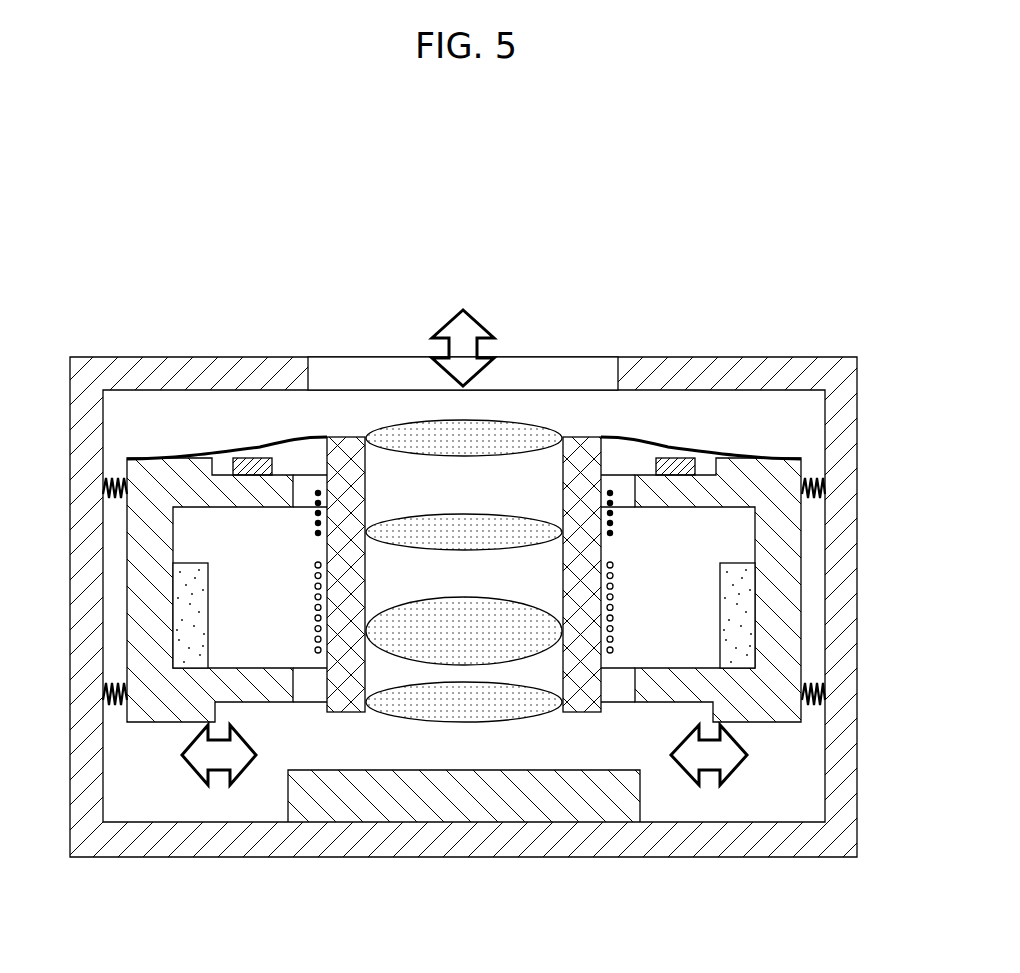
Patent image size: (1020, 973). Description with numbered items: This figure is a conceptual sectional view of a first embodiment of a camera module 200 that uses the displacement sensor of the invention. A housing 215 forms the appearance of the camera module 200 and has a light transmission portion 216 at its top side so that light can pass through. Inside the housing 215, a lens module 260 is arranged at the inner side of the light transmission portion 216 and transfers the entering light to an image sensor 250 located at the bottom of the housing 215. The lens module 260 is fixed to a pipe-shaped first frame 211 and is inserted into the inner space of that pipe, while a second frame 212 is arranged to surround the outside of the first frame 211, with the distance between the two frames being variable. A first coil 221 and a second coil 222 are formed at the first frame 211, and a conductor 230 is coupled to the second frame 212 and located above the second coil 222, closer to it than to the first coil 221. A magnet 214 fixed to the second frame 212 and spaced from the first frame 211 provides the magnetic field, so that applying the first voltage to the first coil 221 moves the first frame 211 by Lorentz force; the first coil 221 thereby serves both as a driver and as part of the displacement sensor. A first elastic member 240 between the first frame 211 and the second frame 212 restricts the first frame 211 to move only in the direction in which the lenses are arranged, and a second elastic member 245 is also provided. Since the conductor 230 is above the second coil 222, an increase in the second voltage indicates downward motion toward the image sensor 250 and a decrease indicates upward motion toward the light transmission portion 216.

The camera module 200 is at (106, 270).
The first frame 211 is at (795, 658).
The second frame 212 is at (582, 703).
The magnet 214 is at (177, 628).
The housing 215 is at (847, 424).
The light transmission portion 216 is at (373, 380).
The first coil 221 is at (613, 598).
The second coil 222 is at (613, 532).
The conductor 230 is at (260, 458).
The first elastic member 240 is at (656, 458).
The second elastic member 245 is at (825, 704).
The image sensor 250 is at (465, 817).
The lens module 260 is at (534, 428).